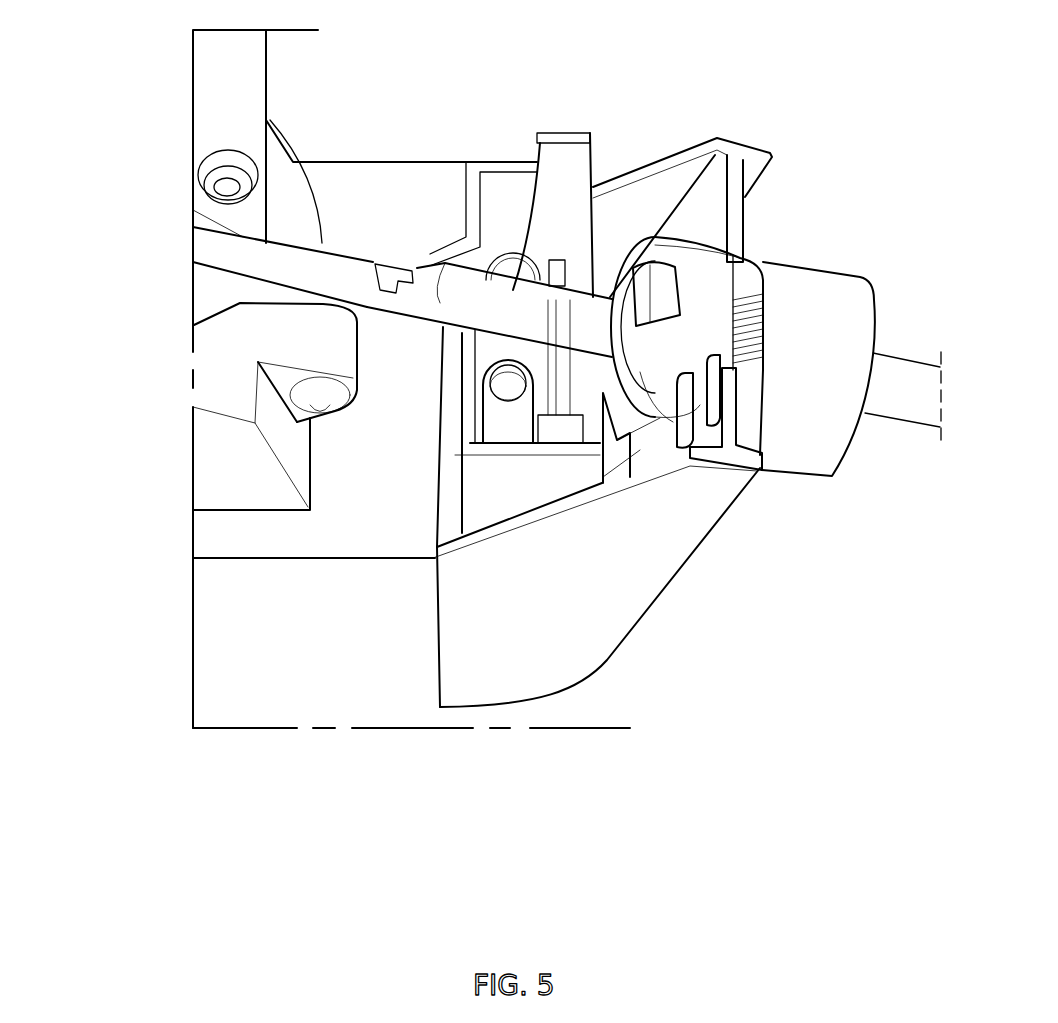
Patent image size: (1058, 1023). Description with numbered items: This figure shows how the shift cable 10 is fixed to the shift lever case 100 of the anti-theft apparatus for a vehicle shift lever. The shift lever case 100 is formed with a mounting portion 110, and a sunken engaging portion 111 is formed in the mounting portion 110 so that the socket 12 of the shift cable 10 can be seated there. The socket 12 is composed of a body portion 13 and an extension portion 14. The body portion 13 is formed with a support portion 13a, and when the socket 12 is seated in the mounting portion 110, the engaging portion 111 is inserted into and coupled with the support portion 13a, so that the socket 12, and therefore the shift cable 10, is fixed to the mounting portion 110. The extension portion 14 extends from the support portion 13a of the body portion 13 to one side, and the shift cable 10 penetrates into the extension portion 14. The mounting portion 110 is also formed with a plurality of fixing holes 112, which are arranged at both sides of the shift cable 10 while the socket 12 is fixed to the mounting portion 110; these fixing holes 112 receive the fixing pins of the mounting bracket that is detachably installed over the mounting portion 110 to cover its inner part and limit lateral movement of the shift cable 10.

The shift lever case 100 is at (190, 648).
The shift cable 10 is at (390, 277).
The socket 12 is at (857, 266).
The body portion 13 is at (705, 295).
The support portion 13a is at (700, 325).
The extension portion 14 is at (647, 290).
The mounting portion 110 is at (553, 625).
The engaging portion 111 is at (613, 468).
The fixing holes 112 is at (508, 383).